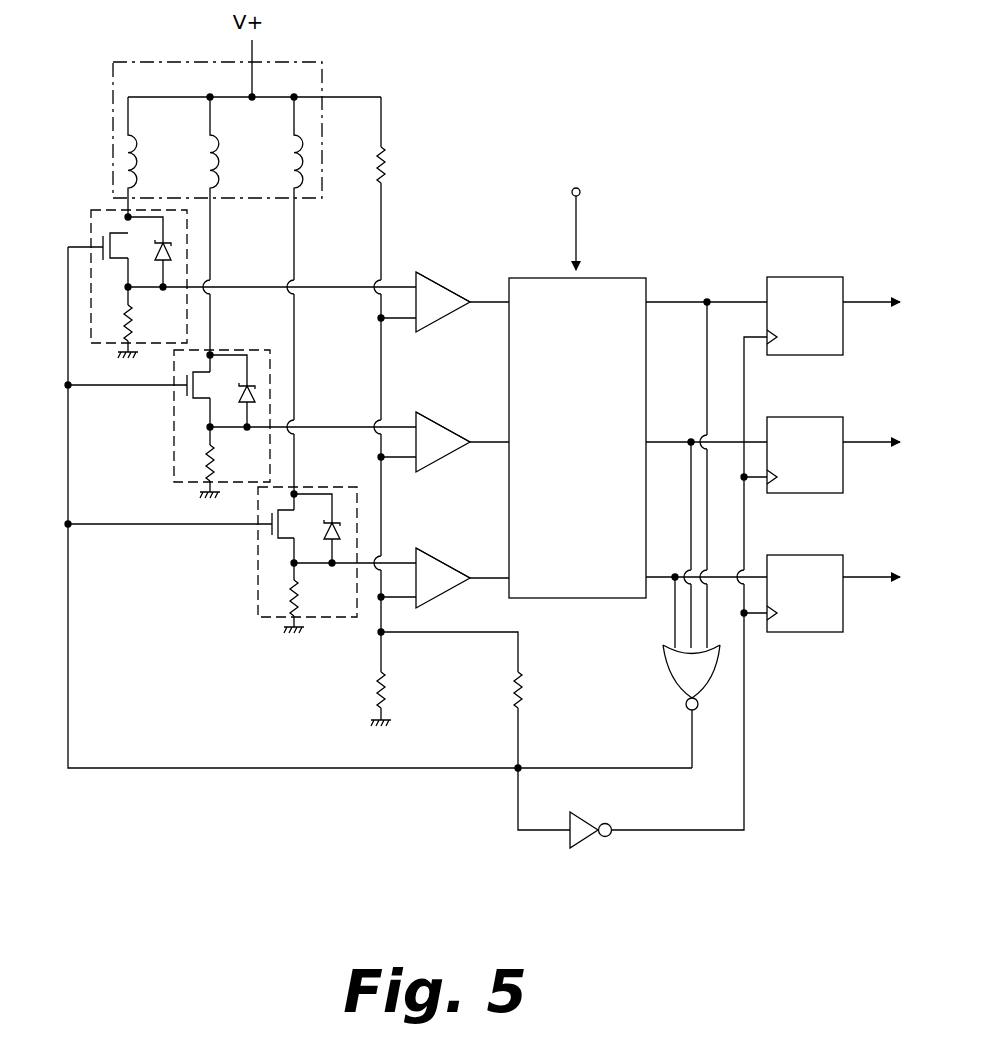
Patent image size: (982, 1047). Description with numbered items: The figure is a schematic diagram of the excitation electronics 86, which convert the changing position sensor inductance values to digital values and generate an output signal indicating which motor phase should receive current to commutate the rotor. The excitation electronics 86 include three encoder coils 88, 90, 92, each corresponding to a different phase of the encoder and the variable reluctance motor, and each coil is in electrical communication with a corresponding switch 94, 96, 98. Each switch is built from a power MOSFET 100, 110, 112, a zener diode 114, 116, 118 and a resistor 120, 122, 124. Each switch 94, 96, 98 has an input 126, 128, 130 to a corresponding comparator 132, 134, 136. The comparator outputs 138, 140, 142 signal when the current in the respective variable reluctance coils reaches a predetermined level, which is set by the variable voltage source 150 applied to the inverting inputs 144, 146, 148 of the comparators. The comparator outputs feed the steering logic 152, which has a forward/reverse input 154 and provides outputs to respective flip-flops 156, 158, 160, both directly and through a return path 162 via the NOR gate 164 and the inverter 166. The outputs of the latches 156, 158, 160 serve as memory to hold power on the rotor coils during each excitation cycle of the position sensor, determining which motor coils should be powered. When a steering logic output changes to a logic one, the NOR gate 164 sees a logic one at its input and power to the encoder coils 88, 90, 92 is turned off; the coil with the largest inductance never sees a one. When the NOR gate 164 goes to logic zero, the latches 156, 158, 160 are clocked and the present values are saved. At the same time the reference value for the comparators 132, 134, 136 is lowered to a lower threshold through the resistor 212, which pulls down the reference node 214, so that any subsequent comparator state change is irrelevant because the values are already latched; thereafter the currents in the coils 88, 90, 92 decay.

The excitation electronics 86 is at (460, 100).
The encoder coil 88 is at (145, 172).
The encoder coil 90 is at (228, 172).
The encoder coil 92 is at (312, 172).
The switch 94 is at (217, 284).
The switch 96 is at (242, 402).
The switch 98 is at (242, 548).
The power MOSFET 100 is at (104, 252).
The power MOSFET 110 is at (187, 396).
The power MOSFET 112 is at (272, 536).
The zener diode 114 is at (180, 257).
The zener diode 116 is at (270, 388).
The zener diode 118 is at (352, 530).
The resistor 120 is at (124, 312).
The resistor 122 is at (205, 450).
The resistor 124 is at (290, 590).
The input 126 is at (416, 278).
The input 128 is at (416, 418).
The input 130 is at (416, 554).
The comparator 132 is at (445, 283).
The comparator 134 is at (445, 423).
The comparator 136 is at (445, 559).
The comparator output 138 is at (486, 300).
The comparator output 140 is at (486, 440).
The comparator output 142 is at (486, 577).
The inverting input 144 is at (415, 325).
The inverting input 146 is at (415, 460).
The inverting input 148 is at (415, 603).
The variable voltage source 150 is at (393, 700).
The steering logic 152 is at (627, 276).
The forward/reverse input 154 is at (580, 196).
The flip-flop 156 is at (832, 276).
The flip-flop 158 is at (835, 415).
The flip-flop 160 is at (835, 553).
The return path 162 is at (748, 718).
The NOR gate 164 is at (668, 676).
The inverter 166 is at (590, 838).
The resistor 212 is at (526, 695).
The reference node 214 is at (388, 640).